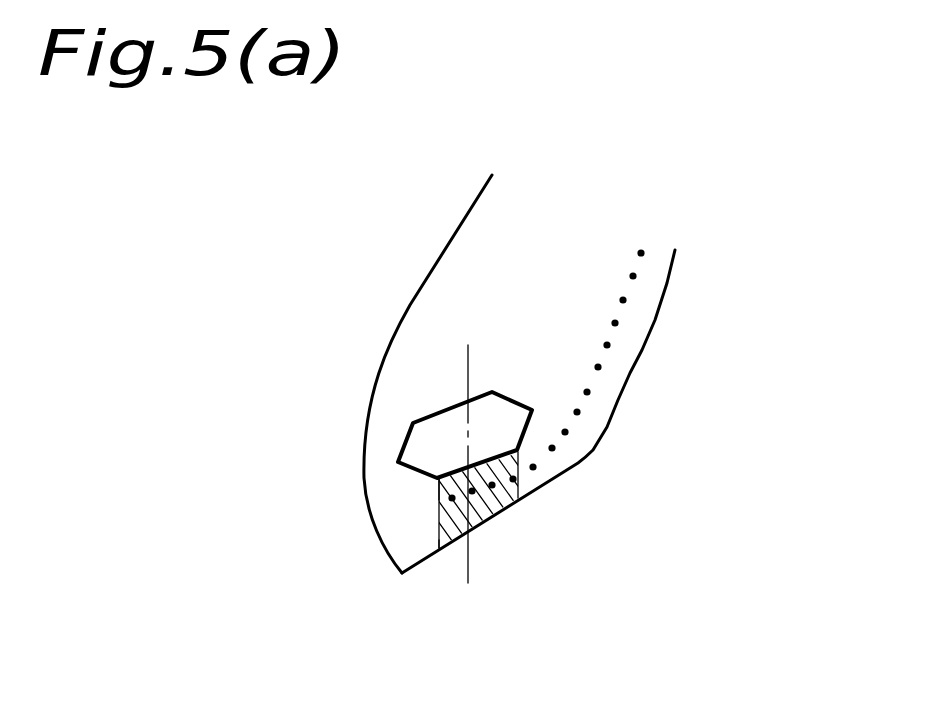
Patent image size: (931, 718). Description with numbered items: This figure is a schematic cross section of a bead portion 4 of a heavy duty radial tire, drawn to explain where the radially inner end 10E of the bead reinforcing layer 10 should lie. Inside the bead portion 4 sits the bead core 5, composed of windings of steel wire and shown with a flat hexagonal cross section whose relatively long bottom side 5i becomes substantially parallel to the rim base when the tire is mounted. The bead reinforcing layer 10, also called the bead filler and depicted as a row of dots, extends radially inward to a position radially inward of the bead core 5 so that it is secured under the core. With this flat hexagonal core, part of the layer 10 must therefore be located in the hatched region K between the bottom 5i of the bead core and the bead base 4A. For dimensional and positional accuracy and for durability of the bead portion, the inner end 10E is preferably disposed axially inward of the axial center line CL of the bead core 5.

The bead portion 4 is at (668, 323).
The bead base 4A is at (537, 483).
The bead core 5 is at (432, 414).
The bottom side of bead core 5i is at (441, 490).
The bead reinforcing layer 10 is at (602, 367).
The radially inner end of bead reinforcing layer 10E is at (440, 543).
The region between bead core bottom and bead base K is at (493, 503).
The axial center line of bead core CL is at (467, 373).